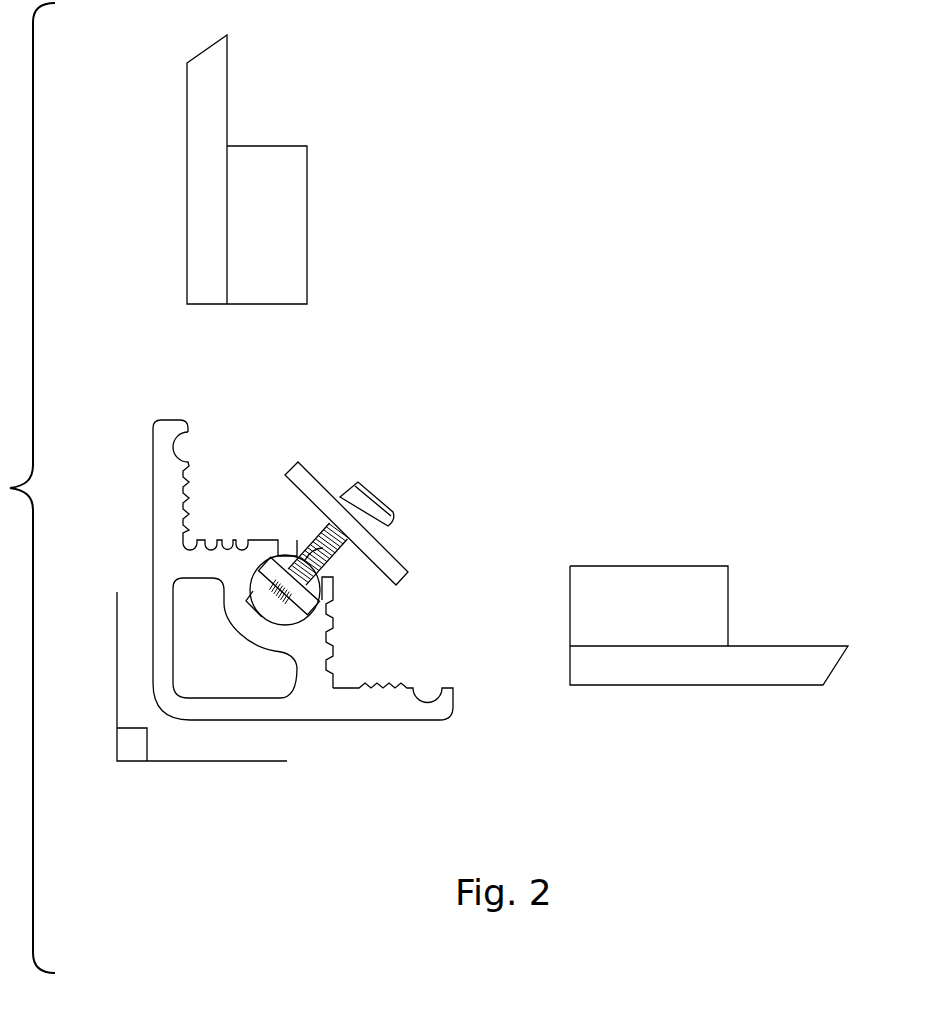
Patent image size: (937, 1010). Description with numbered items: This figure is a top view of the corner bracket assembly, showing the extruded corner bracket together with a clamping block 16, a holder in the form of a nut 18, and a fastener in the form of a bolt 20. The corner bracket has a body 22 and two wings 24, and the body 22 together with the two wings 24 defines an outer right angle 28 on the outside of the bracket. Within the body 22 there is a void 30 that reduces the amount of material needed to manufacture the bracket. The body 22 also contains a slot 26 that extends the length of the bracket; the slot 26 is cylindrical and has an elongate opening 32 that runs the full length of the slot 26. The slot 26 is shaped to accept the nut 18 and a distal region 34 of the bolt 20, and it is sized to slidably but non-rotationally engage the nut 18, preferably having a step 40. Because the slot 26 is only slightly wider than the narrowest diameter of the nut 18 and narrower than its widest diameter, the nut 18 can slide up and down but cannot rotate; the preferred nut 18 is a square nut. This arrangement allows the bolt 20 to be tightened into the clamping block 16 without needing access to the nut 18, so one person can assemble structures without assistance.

The clamping block 16 is at (399, 568).
The nut 18 is at (281, 565).
The bolt 20 is at (372, 514).
The body 22 is at (167, 687).
The wings 24 is at (160, 497).
The slot 26 is at (260, 583).
The outer right angle 28 is at (132, 745).
The void 30 is at (227, 687).
The elongate opening 32 is at (323, 548).
The distal region of the bolt 34 is at (283, 605).
The step 40 is at (262, 617).